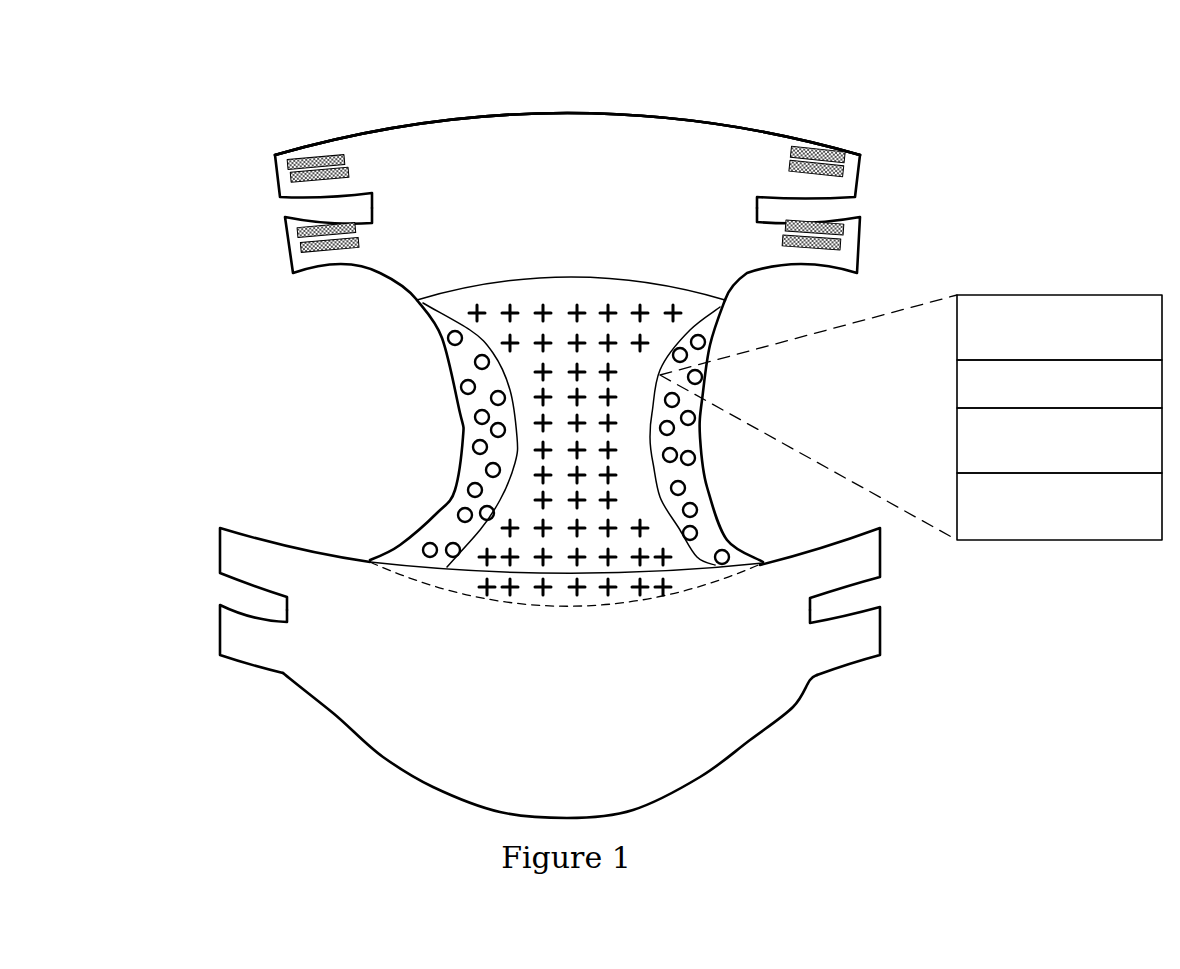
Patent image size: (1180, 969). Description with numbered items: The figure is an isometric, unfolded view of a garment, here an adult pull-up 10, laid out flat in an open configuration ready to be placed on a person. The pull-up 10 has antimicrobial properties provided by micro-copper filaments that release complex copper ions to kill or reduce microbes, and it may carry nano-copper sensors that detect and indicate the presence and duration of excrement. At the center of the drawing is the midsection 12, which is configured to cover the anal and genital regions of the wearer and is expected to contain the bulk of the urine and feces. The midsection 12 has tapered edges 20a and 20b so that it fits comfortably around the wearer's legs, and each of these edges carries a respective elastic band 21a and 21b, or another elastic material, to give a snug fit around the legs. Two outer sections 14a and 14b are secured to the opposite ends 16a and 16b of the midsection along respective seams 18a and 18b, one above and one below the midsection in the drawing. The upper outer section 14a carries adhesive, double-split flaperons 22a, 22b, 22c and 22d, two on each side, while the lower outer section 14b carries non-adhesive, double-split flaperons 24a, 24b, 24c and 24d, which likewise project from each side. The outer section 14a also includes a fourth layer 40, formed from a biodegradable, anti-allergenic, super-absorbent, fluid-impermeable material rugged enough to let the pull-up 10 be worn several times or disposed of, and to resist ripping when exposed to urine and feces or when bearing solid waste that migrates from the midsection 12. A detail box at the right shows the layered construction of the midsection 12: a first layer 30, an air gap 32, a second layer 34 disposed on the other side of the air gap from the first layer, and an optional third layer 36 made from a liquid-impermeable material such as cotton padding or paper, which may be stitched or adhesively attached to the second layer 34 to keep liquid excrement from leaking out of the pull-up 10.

The adult pull-up 10 is at (324, 117).
The midsection 12 is at (381, 416).
The outer section 14a is at (429, 117).
The outer section 14b is at (431, 791).
The end of the midsection 16a is at (418, 299).
The end of the midsection 16b is at (765, 559).
The seam 18a is at (534, 276).
The seam 18b is at (524, 608).
The tapered edge 20a is at (460, 490).
The tapered edge 20b is at (710, 487).
The elastic band 21a is at (465, 363).
The elastic band 21b is at (705, 328).
The adhesive double-split flaperon 22a is at (272, 171).
The adhesive double-split flaperon 22b is at (864, 170).
The adhesive double-split flaperon 22c is at (864, 241).
The adhesive double-split flaperon 22d is at (283, 242).
The non-adhesive double-split flaperon 24a is at (218, 552).
The non-adhesive double-split flaperon 24b is at (882, 556).
The non-adhesive double-split flaperon 24c is at (882, 634).
The non-adhesive double-split flaperon 24d is at (218, 635).
The first layer 30 is at (1044, 343).
The air gap 32 is at (1044, 398).
The second layer 34 is at (1044, 456).
The third layer 36 is at (1044, 523).
The fourth layer 40 is at (666, 136).